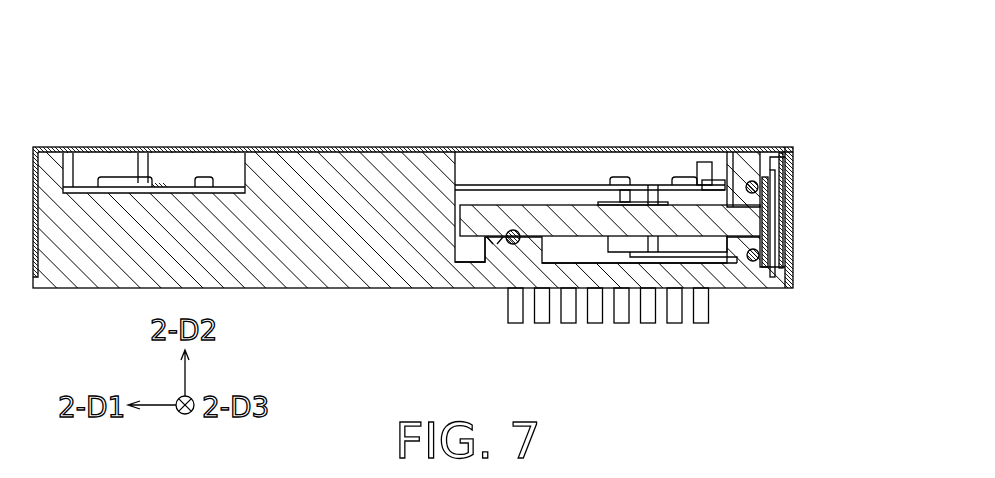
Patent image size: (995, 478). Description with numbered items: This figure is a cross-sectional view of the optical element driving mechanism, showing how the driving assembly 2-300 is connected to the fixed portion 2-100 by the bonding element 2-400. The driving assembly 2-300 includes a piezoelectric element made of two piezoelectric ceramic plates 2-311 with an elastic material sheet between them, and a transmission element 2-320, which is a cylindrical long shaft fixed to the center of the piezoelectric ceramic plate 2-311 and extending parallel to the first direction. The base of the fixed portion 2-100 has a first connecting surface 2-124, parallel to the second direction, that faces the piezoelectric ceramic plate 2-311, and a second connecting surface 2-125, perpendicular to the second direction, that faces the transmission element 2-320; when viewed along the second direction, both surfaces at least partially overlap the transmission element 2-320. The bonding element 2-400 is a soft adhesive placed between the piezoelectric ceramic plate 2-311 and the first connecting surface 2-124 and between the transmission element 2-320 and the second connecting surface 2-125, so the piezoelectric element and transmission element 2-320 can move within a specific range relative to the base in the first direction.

The fixed portion 2-100 is at (770, 283).
The first connecting surface 2-124 is at (770, 160).
The second connecting surface 2-125 is at (506, 246).
The driving assembly 2-300 is at (562, 195).
The piezoelectric ceramic plate 2-311 is at (781, 187).
The transmission element 2-320 is at (653, 215).
The bonding element 2-400 is at (512, 230).